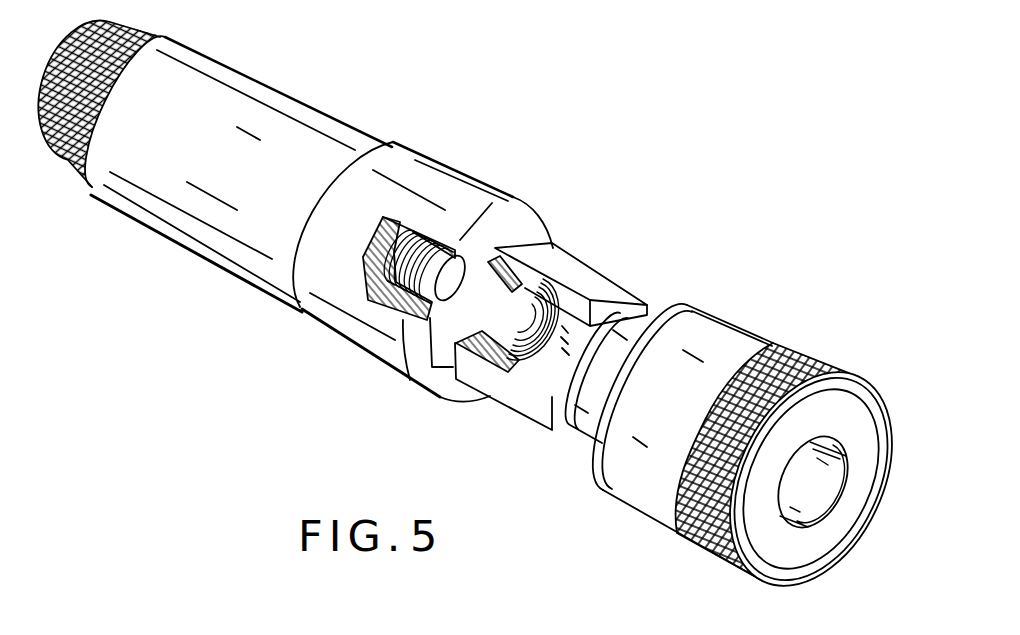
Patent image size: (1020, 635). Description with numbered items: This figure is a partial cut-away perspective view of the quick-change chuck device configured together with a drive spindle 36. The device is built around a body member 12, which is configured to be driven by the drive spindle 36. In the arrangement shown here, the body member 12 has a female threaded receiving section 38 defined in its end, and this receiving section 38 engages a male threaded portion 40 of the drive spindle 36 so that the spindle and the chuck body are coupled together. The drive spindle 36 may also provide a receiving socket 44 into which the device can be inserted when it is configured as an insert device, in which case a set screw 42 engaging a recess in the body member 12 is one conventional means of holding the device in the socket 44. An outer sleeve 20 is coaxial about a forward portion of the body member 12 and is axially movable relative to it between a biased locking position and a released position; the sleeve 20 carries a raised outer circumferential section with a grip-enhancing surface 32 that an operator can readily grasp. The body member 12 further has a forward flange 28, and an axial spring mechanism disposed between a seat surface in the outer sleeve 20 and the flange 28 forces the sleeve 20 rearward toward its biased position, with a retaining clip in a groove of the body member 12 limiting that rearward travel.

The body member 12 is at (590, 273).
The outer sleeve 20 is at (737, 323).
The forward flange 28 is at (800, 560).
The grip-enhancing surface 32 is at (707, 563).
The drive spindle 36 is at (276, 107).
The female threaded receiving section 38 is at (512, 385).
The male threaded portion 40 is at (415, 227).
The set screw 42 is at (136, 328).
The receiving socket 44 is at (413, 383).